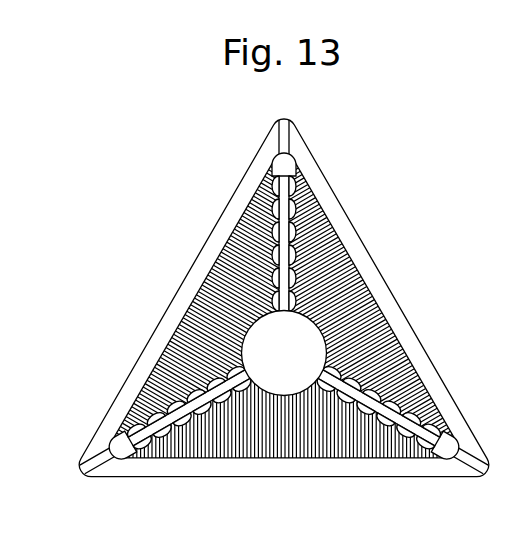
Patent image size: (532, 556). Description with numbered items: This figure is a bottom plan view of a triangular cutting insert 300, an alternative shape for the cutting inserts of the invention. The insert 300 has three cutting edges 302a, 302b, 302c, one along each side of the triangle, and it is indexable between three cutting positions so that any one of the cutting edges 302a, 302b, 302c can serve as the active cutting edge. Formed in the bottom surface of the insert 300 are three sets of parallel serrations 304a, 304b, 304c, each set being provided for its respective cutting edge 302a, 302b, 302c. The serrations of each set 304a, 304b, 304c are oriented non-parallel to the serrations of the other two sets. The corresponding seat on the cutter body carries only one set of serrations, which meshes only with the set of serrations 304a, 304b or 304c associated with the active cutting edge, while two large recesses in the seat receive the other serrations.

The triangular insert 300 is at (96, 372).
The cutting edge 302a is at (248, 210).
The cutting edge 302b is at (323, 208).
The cutting edge 302c is at (212, 459).
The set of serrations 304a is at (197, 294).
The set of serrations 304b is at (371, 294).
The set of serrations 304c is at (325, 459).